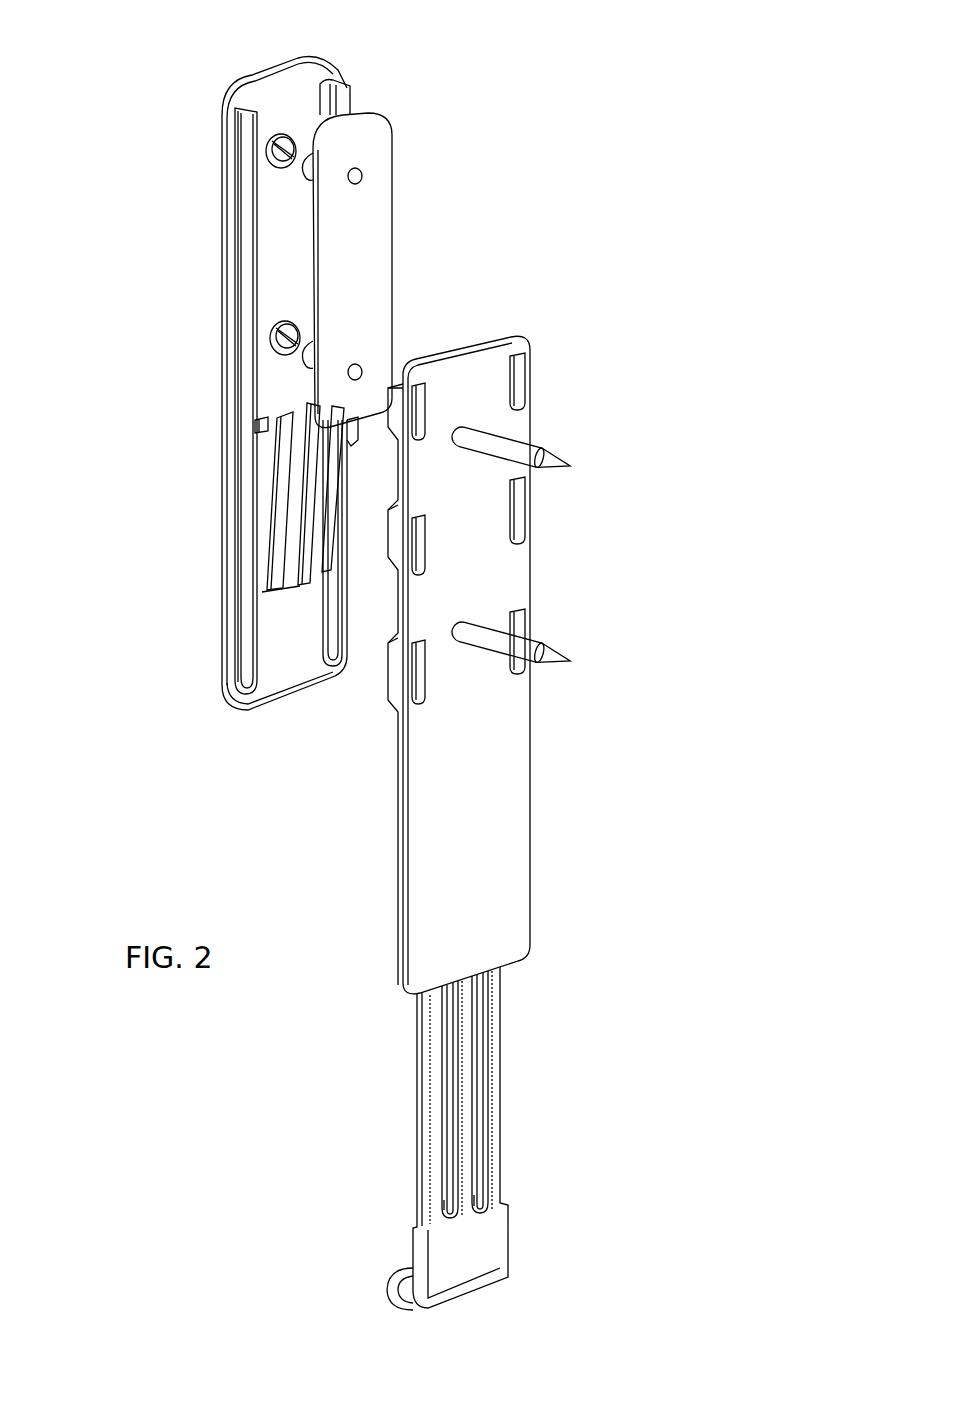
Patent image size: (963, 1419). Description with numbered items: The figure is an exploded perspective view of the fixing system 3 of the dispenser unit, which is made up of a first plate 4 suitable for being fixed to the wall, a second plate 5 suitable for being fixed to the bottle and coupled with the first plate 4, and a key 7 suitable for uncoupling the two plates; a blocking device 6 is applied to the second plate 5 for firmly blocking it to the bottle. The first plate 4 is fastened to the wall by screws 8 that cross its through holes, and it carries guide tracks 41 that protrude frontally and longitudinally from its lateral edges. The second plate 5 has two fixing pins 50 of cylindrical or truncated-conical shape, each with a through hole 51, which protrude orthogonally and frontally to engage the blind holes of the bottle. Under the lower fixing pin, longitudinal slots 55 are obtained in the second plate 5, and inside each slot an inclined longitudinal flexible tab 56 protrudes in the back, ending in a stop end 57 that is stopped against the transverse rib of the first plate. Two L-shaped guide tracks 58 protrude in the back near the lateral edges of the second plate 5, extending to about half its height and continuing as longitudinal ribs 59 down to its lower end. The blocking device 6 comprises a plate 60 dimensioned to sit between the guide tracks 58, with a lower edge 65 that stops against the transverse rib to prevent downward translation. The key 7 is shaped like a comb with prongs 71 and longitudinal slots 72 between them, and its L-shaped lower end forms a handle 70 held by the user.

The fixing system 3 is at (543, 240).
The first plate 4 is at (538, 960).
The second plate 5 is at (240, 713).
The blocking device 6 is at (412, 246).
The key 7 is at (449, 1138).
The screws 8 is at (517, 430).
The guide tracks 41 is at (390, 673).
The fixing pins 50 is at (470, 613).
The through hole 51 is at (307, 140).
The longitudinal slots 55 is at (283, 407).
The longitudinal flexible tab 56 is at (292, 472).
The stop end 57 is at (257, 431).
The guide tracks 58 is at (253, 200).
The longitudinal ribs 59 is at (250, 630).
The plate 60 is at (378, 272).
The lower edge 65 is at (360, 437).
The handle 70 is at (407, 1280).
The prongs 71 is at (497, 1067).
The longitudinal slots 72 is at (443, 1153).